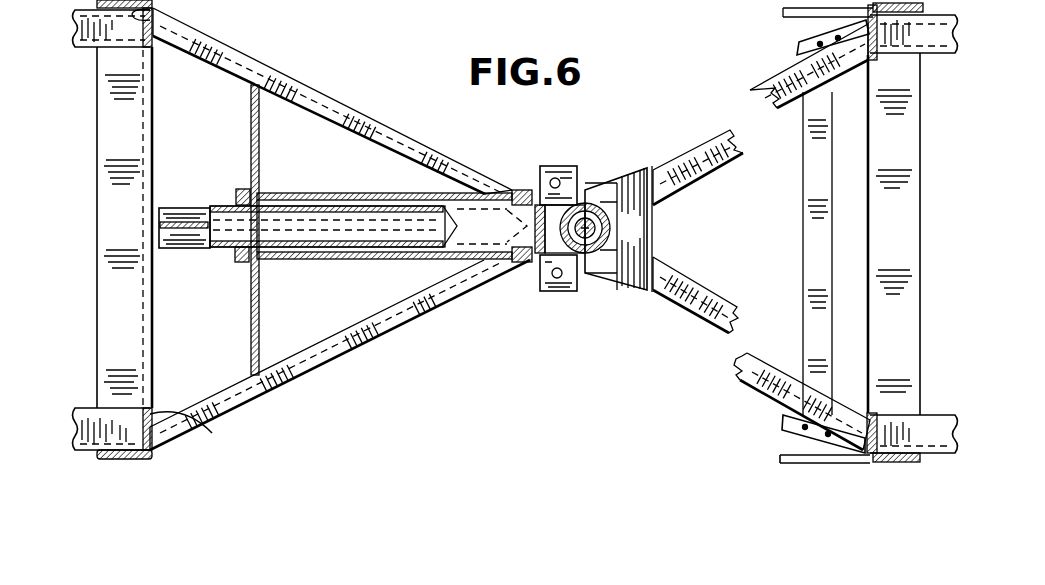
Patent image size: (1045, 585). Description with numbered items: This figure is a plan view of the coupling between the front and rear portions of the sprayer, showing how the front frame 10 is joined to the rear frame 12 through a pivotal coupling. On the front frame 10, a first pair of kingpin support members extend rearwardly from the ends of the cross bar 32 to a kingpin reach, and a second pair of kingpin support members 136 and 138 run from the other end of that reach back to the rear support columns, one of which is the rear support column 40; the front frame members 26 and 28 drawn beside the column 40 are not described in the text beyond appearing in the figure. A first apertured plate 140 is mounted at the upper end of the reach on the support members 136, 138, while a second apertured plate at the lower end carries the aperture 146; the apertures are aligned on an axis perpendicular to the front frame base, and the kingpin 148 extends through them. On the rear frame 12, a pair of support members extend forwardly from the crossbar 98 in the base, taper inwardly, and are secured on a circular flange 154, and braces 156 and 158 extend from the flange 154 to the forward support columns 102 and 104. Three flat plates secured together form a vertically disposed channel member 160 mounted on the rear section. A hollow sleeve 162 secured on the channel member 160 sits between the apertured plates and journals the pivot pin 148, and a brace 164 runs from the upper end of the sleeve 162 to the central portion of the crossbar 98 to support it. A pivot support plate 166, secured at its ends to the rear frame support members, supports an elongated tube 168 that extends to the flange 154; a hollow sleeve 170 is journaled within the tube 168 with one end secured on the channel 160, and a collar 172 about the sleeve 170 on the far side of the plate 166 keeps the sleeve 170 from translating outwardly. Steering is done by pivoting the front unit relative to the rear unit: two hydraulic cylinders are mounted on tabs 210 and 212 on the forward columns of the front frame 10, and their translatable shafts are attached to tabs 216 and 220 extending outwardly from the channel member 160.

The front frame 10 is at (924, 468).
The rear frame 12 is at (115, 466).
The lower right beam 26 is at (900, 428).
The upper right beam 28 is at (937, 38).
The cross bar 32 is at (890, 210).
The rear support column 40 is at (867, 460).
The crossbar 98 is at (124, 227).
The forward support column 102 is at (150, 12).
The forward support column 104 is at (212, 433).
The kingpin support member 136 is at (710, 310).
The kingpin support member 138 is at (697, 148).
The first apertured plate 140 is at (607, 188).
The aperture 146 is at (576, 0).
The kingpin 148 is at (595, 227).
The circular flange 154 is at (522, 190).
The brace 156 is at (300, 68).
The brace 158 is at (336, 372).
The channel member 160 is at (538, 290).
The hollow sleeve 162 is at (602, 247).
The brace 164 is at (170, 205).
The pivot support plate 166 is at (257, 328).
The elongated tube 168 is at (396, 236).
The hollow sleeve 170 is at (221, 204).
The collar 172 is at (238, 262).
The tab 210 is at (783, 430).
The tab 212 is at (800, 44).
The tab 216 is at (575, 292).
The tab 220 is at (551, 166).